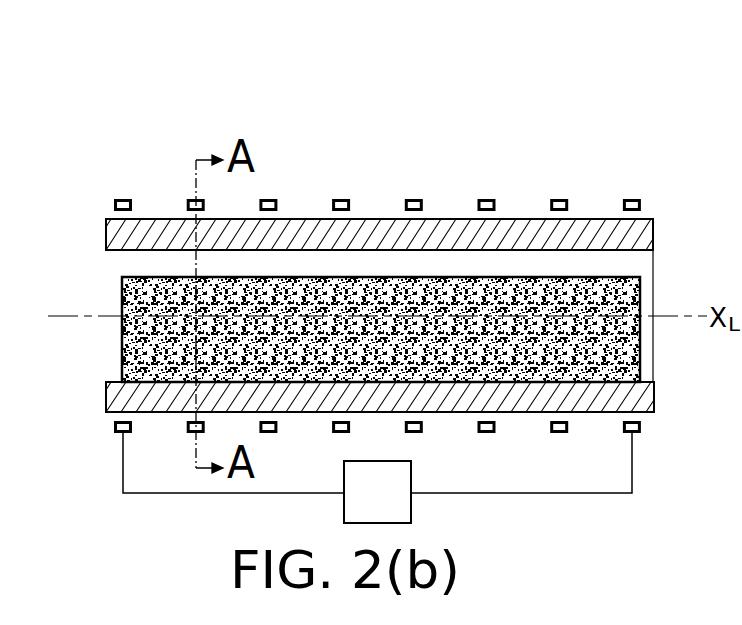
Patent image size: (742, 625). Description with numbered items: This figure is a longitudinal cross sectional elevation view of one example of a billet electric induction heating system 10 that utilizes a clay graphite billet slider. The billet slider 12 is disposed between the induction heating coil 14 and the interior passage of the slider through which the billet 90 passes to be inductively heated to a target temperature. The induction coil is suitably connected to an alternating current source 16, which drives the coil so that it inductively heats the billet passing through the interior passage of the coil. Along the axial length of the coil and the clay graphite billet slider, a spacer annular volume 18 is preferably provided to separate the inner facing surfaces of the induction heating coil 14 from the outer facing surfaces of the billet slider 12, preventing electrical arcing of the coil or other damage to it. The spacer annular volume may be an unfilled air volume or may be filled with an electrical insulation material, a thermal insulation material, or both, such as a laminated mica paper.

The billet electric induction heating system 10 is at (397, 70).
The billet slider 12 is at (633, 235).
The induction heating coil 14 is at (109, 198).
The alternating current source 16 is at (377, 478).
The spacer annular volume 18 is at (142, 264).
The billet 90 is at (385, 362).